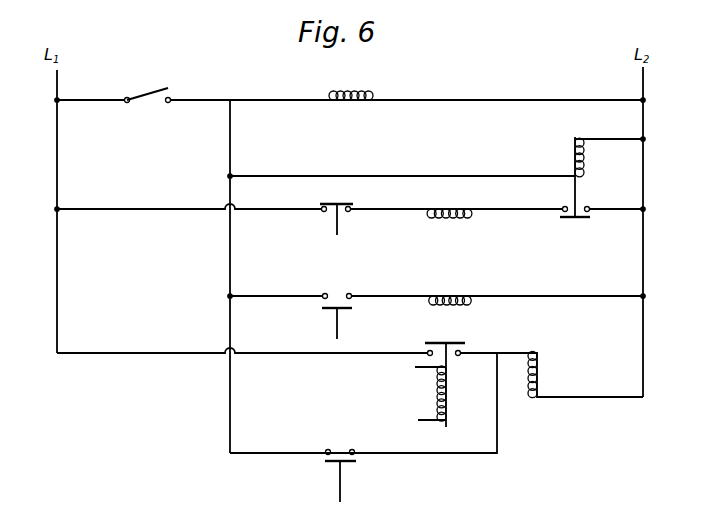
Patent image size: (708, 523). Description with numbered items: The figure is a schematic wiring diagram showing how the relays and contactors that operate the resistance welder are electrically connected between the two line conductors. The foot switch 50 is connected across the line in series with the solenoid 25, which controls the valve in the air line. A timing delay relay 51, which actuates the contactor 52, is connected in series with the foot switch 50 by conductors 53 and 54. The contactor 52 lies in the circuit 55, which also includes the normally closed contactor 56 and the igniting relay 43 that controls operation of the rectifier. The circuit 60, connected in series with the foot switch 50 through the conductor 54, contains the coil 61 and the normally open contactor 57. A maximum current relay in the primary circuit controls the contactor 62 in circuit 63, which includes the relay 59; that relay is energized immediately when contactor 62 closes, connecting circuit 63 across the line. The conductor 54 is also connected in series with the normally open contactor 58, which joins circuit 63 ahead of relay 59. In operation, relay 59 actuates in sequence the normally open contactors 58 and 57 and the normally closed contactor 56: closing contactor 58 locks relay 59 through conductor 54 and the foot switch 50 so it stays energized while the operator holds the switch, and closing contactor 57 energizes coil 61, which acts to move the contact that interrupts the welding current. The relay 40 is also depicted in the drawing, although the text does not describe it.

The solenoid 25 is at (350, 93).
The relay coil 40 is at (436, 393).
The igniting relay 43 is at (449, 226).
The foot switch 50 is at (151, 93).
The timing delay relay 51 is at (571, 150).
The contactor 52 is at (577, 221).
The conductor 53 is at (430, 175).
The conductor 54 is at (229, 268).
The circuit 55 is at (170, 207).
The normally closed contactor 56 is at (336, 203).
The normally open contactor 57 is at (337, 294).
The normally open contactor 58 is at (338, 450).
The relay 59 is at (540, 373).
The circuit 60 is at (572, 295).
The coil 61 is at (456, 294).
The contactor 62 is at (442, 342).
The circuit 63 is at (149, 355).